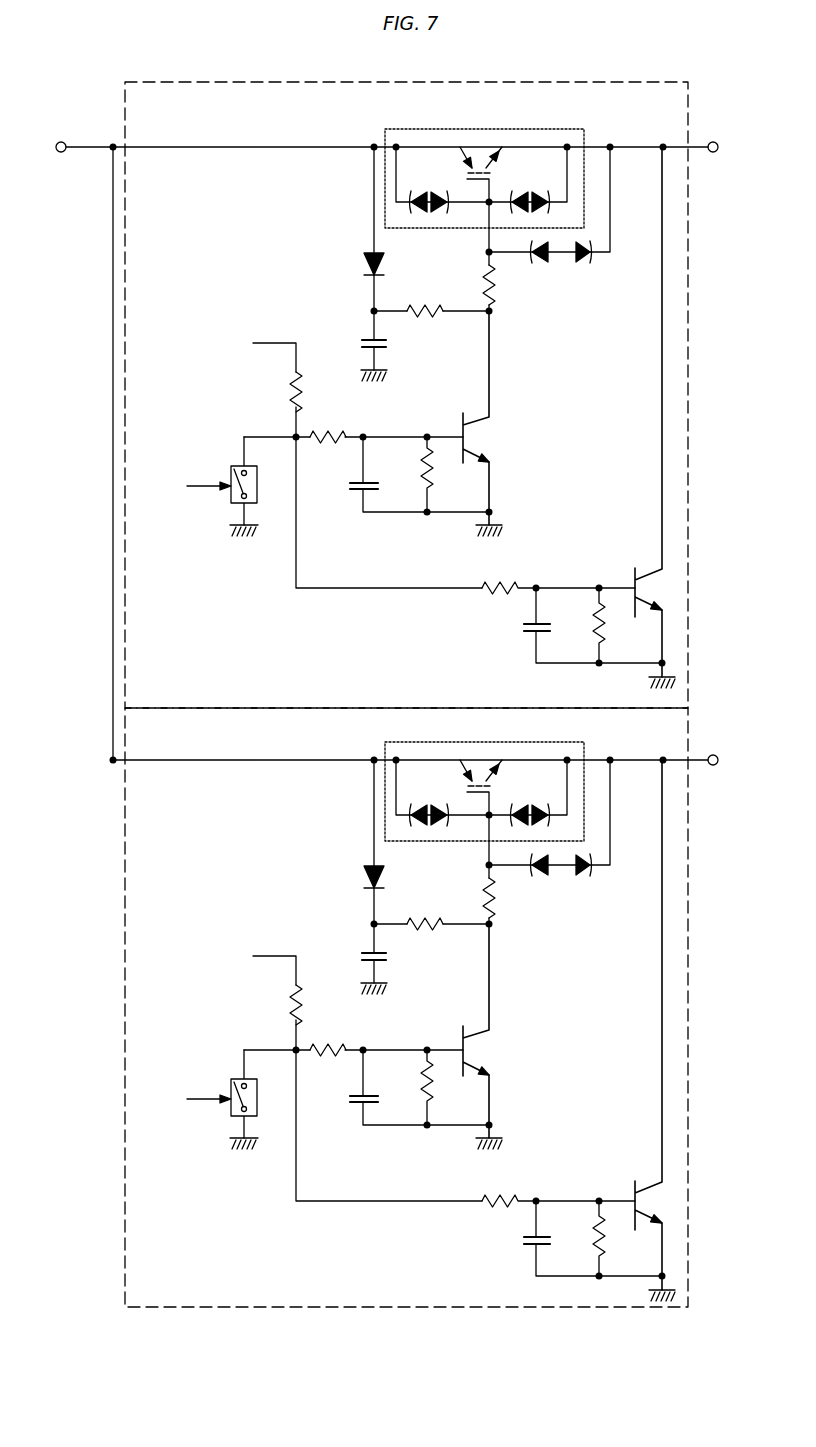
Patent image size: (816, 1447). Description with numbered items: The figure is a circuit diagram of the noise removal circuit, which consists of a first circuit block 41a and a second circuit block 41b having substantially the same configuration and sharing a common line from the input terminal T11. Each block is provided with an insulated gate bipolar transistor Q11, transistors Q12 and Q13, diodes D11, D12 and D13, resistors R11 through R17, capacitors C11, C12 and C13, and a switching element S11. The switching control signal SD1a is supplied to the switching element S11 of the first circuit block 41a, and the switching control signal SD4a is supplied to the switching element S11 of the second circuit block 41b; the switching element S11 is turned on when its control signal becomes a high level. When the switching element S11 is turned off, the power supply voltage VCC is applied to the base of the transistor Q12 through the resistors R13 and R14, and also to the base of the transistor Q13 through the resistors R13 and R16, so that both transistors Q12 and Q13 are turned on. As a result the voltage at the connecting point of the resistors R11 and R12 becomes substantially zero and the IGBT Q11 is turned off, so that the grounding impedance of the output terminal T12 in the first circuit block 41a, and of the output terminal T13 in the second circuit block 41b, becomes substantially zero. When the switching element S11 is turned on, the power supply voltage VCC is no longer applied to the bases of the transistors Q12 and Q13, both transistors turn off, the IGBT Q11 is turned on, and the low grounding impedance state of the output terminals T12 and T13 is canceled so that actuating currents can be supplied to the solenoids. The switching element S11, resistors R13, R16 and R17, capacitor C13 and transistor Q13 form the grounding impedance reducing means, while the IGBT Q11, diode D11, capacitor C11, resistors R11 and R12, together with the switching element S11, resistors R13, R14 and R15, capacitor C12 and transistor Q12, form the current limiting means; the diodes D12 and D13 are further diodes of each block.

The input terminal T11 is at (78, 136).
The output terminal T12 is at (715, 747).
The output terminal T13 is at (715, 134).
The first circuit block 41a is at (272, 708).
The second circuit block 41b is at (270, 82).
The insulated gate bipolar transistor Q11 is at (467, 129).
The transistor Q12 is at (469, 423).
The transistor Q13 is at (639, 417).
The diode D11 is at (353, 265).
The diode D12 is at (544, 264).
The diode D13 is at (596, 264).
The resistor R11 is at (428, 331).
The resistor R12 is at (469, 285).
The resistor R13 is at (273, 392).
The resistor R14 is at (330, 424).
The resistor R15 is at (409, 474).
The resistor R16 is at (508, 575).
The resistor R17 is at (580, 625).
The capacitor C11 is at (352, 358).
The capacitor C12 is at (399, 474).
The capacitor C13 is at (575, 625).
The switching element S11 is at (229, 486).
The power supply voltage VCC is at (253, 352).
The switching control signal SD4a is at (181, 488).
The switching control signal SD1a is at (181, 1101).